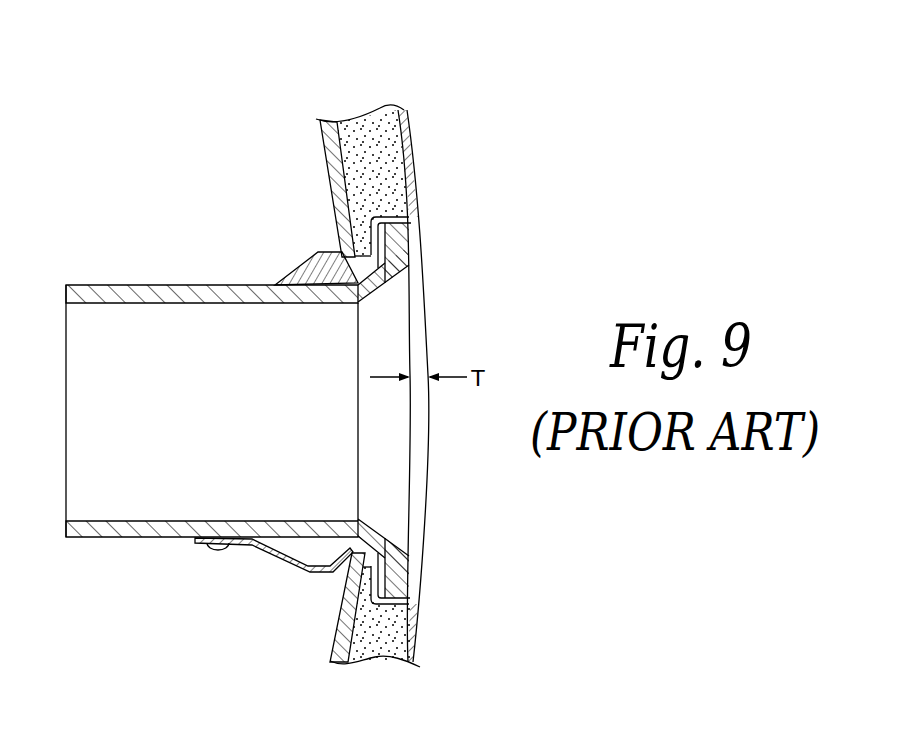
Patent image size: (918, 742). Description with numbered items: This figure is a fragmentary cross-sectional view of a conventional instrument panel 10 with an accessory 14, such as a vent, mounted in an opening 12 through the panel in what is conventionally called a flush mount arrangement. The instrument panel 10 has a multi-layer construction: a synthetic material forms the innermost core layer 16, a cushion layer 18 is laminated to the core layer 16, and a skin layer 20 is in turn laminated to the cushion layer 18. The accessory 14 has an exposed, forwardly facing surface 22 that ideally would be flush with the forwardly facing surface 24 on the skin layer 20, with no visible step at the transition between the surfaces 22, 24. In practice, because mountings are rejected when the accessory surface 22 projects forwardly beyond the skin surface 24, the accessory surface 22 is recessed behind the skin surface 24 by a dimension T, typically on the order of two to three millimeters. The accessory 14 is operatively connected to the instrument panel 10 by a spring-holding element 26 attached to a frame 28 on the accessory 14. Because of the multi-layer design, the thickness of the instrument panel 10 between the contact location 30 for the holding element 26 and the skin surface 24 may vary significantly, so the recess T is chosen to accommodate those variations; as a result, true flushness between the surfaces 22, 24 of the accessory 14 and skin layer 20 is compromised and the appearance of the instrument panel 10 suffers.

The instrument panel 10 is at (421, 161).
The opening 12 is at (380, 595).
The accessory 14 is at (128, 542).
The core layer 16 is at (327, 616).
The cushion layer 18 is at (378, 664).
The skin layer 20 is at (414, 645).
The forwardly facing surface 22 is at (410, 307).
The forwardly facing surface 24 is at (416, 130).
The spring-holding element 26 is at (283, 557).
The frame 28 is at (213, 518).
The contact location 30 is at (365, 548).